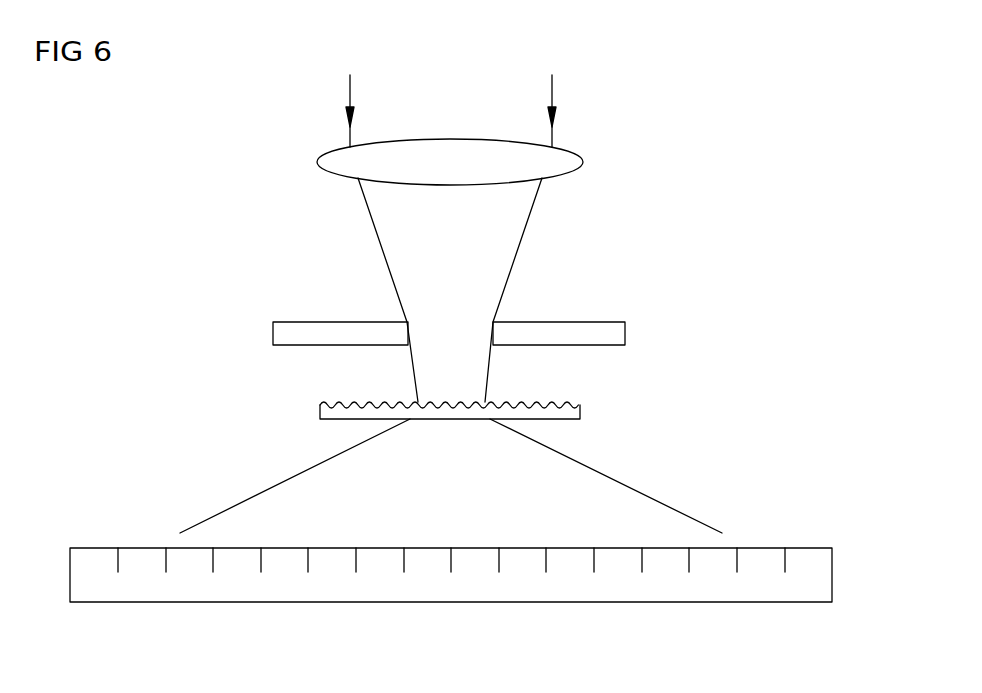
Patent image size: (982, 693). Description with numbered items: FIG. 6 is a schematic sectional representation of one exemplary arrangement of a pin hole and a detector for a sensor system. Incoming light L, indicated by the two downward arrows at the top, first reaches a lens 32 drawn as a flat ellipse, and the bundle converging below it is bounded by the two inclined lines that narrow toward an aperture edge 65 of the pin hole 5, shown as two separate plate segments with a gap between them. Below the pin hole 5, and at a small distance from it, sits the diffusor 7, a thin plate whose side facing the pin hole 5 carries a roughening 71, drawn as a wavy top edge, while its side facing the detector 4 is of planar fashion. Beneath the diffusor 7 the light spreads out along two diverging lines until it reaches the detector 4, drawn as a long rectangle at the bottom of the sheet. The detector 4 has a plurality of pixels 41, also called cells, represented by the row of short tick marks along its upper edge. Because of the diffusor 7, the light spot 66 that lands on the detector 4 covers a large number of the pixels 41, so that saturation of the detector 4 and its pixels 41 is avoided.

The light L is at (552, 93).
The lens 32 is at (570, 158).
The aperture edge 65 is at (497, 322).
The pin hole 5 is at (620, 335).
The roughening 71 is at (560, 400).
The diffusor 7 is at (583, 412).
The light spot 66 is at (676, 545).
The pixels 41 is at (762, 558).
The detector 4 is at (832, 572).